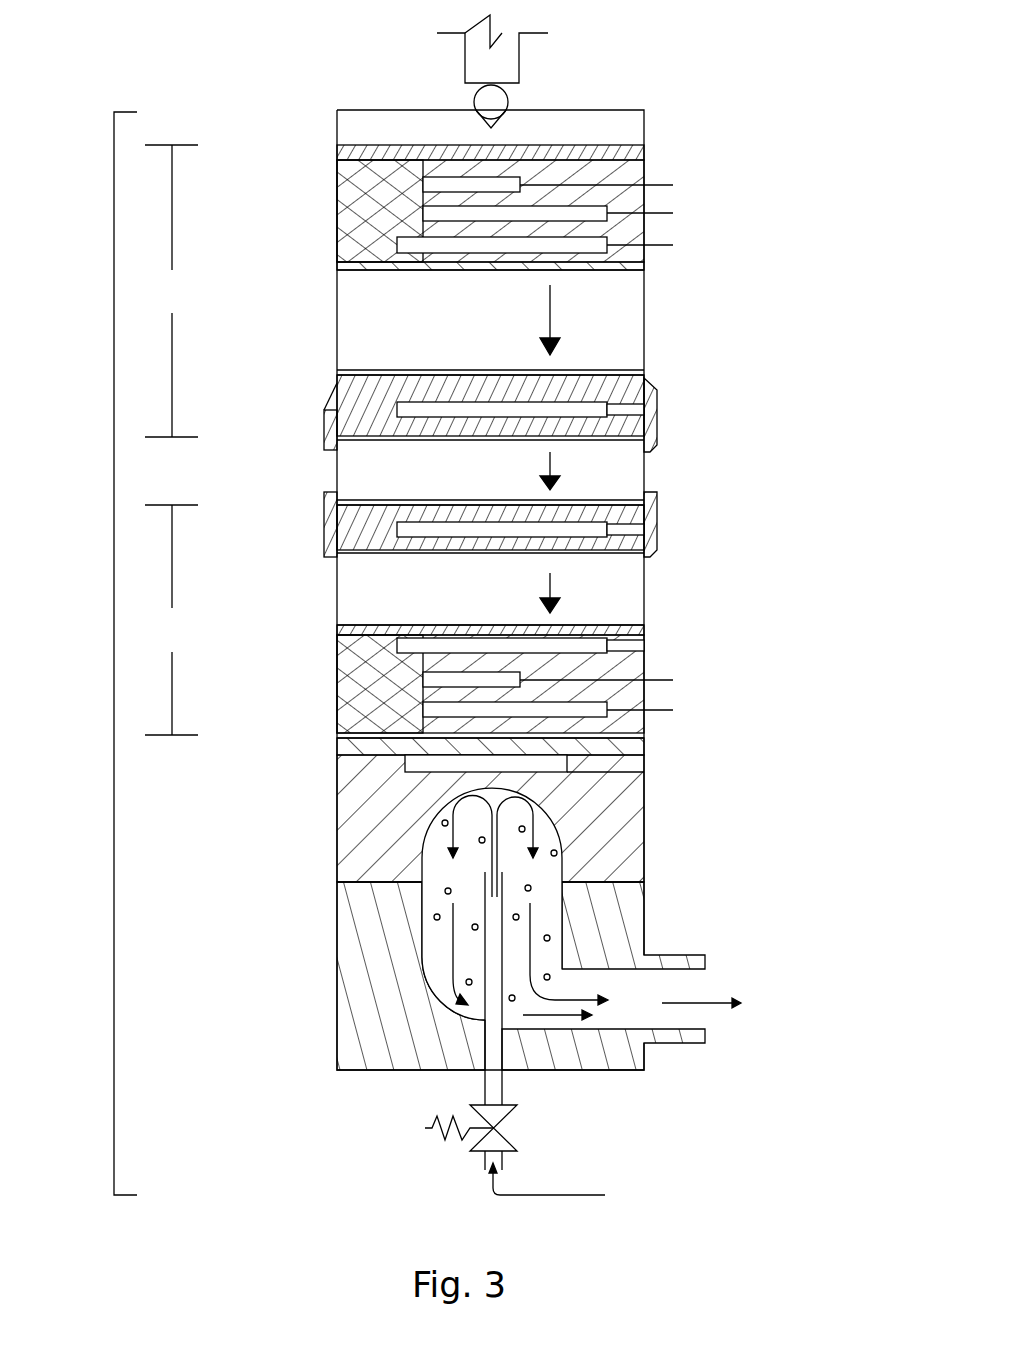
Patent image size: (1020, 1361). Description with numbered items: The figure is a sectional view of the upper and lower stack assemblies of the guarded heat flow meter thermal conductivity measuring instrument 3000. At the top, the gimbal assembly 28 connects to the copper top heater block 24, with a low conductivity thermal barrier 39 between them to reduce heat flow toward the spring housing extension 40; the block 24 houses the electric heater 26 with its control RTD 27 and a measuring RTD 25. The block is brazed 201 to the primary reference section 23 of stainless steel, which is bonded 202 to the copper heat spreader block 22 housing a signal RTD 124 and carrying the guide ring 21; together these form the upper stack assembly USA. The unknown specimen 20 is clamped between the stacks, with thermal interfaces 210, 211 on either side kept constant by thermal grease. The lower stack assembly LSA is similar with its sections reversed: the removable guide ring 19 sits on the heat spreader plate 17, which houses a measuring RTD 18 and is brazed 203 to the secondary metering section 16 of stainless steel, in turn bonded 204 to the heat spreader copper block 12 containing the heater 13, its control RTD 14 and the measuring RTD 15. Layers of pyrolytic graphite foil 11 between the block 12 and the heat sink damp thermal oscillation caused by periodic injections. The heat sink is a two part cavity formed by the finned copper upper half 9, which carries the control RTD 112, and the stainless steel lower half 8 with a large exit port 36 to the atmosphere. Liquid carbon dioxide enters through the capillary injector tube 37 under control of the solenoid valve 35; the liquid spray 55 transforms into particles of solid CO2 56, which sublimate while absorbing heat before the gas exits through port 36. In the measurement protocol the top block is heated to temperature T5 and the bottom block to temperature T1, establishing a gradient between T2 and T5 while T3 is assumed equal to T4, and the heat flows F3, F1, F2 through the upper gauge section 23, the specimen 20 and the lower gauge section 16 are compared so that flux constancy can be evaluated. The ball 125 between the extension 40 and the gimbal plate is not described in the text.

The thermal conductivity measuring instrument 3000 is at (114, 669).
The gimbal assembly 28 is at (628, 128).
The thermal barrier 39 is at (640, 153).
The control RTD 27 is at (382, 160).
The electric heater 26 is at (405, 187).
The measuring RTD 25 is at (422, 215).
The top heater block 24 is at (400, 248).
The brazed joint 201 is at (352, 265).
The primary reference section 23 is at (342, 310).
The signal RTD 124 is at (347, 378).
The heat spreader block 22 is at (343, 398).
The brazed bond 202 is at (397, 403).
The guide ring 21 is at (326, 416).
The thermal interface 210 is at (328, 432).
The measuring RTD 18 is at (343, 490).
The thermal interface 211 is at (637, 502).
The heat spreader plate 17 is at (343, 540).
The brazed joint 203 is at (342, 546).
The unknown specimen 20 is at (627, 487).
The guide ring 19 is at (326, 517).
The secondary metering section 16 is at (372, 598).
The brazed bond 204 is at (357, 627).
The heat spreader copper block 12 is at (343, 712).
The measuring RTD 15 is at (405, 647).
The control RTD 14 is at (432, 682).
The heater 13 is at (432, 712).
The pyrolytic graphite foil 11 is at (340, 739).
The control RTD 112 is at (390, 775).
The copper upper half 9 is at (630, 825).
The stainless steel lower half 8 is at (633, 902).
The exit port 36 is at (668, 992).
The solid CO2 particles 56 is at (448, 890).
The liquid spray 55 is at (448, 838).
The capillary injector tube 37 is at (493, 950).
The solenoid valve 35 is at (507, 1135).
The spring housing extension 40 is at (508, 60).
The ball 125 is at (479, 98).
The bottom heater block temperature T1 is at (648, 624).
The lower stack temperature T2 is at (648, 549).
The lower specimen face temperature T3 is at (648, 431).
The upper specimen face temperature T4 is at (648, 372).
The top heater block temperature T5 is at (648, 264).
The flow F1 is at (553, 462).
The flow F2 is at (553, 582).
The flow F3 is at (553, 321).
The upper stack assembly USA is at (171, 291).
The lower stack assembly LSA is at (171, 620).